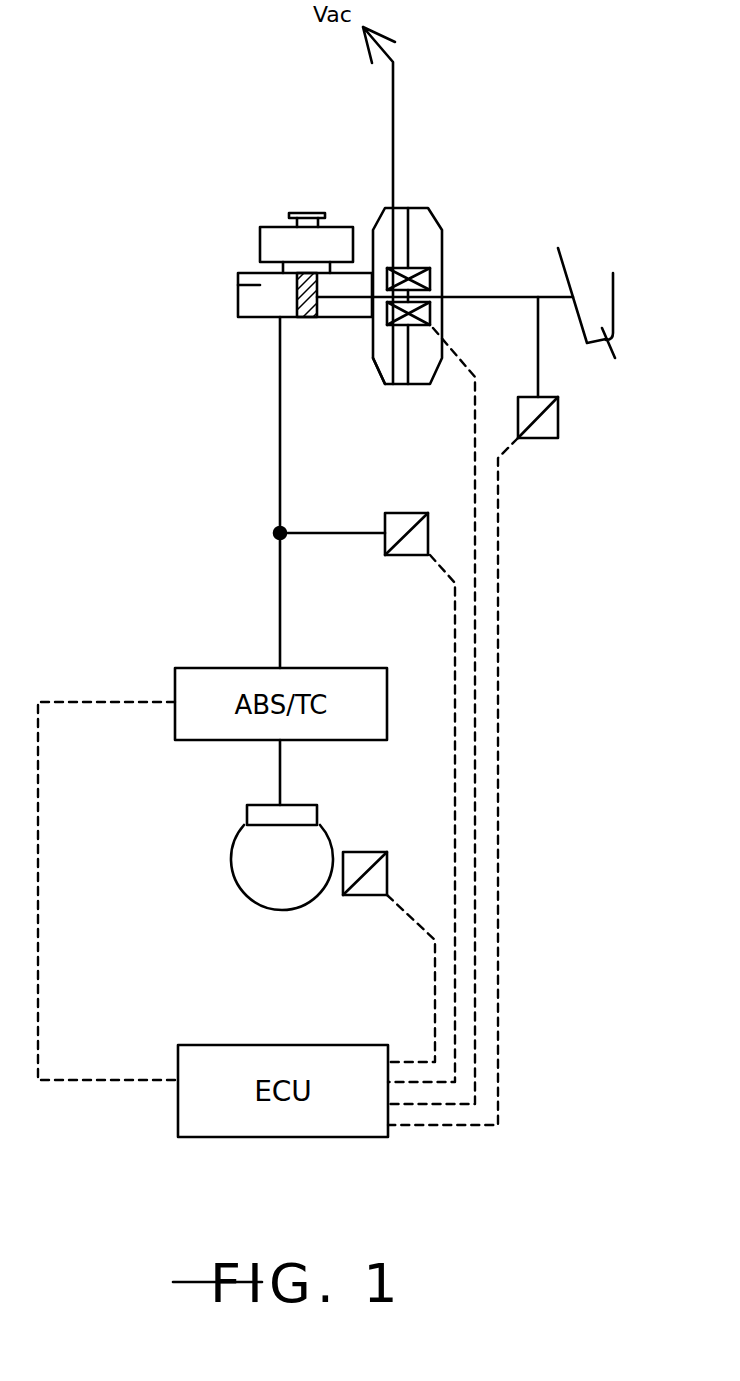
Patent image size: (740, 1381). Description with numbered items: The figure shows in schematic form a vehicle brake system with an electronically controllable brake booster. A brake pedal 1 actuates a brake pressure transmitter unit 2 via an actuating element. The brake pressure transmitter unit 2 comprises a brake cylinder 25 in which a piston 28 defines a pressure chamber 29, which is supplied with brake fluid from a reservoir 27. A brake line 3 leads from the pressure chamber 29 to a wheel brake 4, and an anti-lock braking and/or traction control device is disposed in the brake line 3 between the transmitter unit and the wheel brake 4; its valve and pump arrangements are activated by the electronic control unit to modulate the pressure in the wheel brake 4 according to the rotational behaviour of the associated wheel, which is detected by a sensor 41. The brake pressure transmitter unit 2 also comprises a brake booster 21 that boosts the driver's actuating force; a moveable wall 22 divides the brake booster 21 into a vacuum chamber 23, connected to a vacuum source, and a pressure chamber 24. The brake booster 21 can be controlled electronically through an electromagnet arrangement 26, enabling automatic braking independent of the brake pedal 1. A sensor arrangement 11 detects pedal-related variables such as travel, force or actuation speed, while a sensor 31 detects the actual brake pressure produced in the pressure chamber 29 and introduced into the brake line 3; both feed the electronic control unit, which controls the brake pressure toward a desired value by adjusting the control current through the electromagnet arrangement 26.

The brake pedal 1 is at (613, 273).
The brake pressure transmitter unit 2 is at (195, 53).
The brake line 3 is at (280, 405).
The wheel brake 4 is at (308, 813).
The sensor arrangement 11 is at (550, 430).
The brake booster 21 is at (452, 218).
The moveable wall 22 is at (422, 213).
The vacuum chamber 23 is at (392, 365).
The pressure chamber 24 is at (415, 386).
The brake cylinder 25 is at (238, 298).
The electromagnet arrangement 26 is at (420, 268).
The reservoir 27 is at (275, 235).
The piston 28 is at (295, 289).
The pressure chamber 29 is at (238, 285).
The sensor 31 is at (385, 515).
The sensor 41 is at (368, 852).